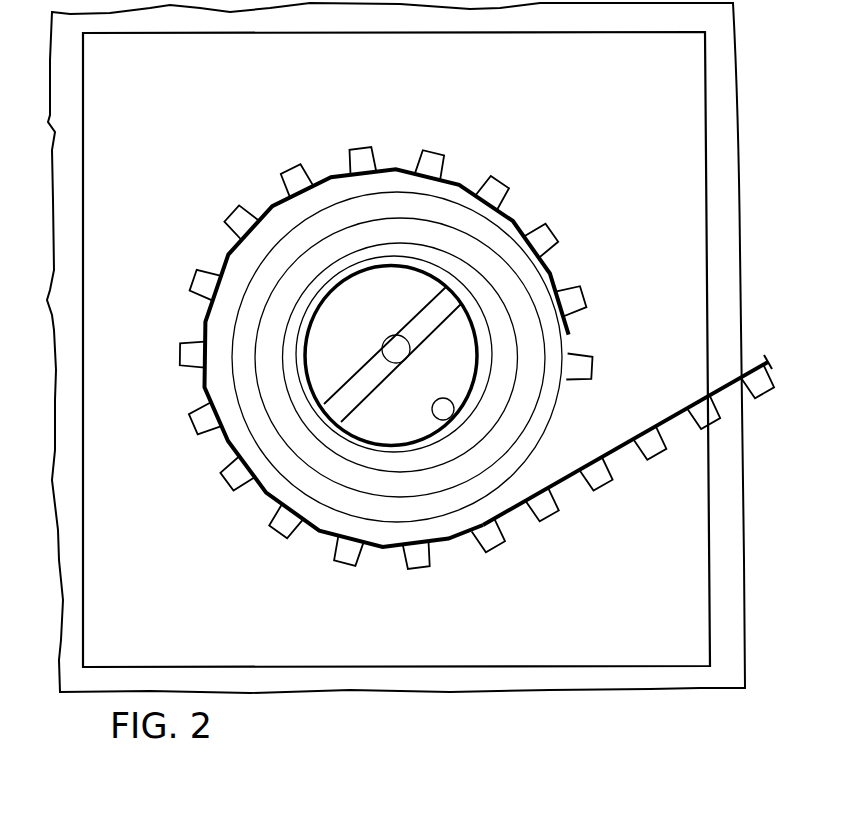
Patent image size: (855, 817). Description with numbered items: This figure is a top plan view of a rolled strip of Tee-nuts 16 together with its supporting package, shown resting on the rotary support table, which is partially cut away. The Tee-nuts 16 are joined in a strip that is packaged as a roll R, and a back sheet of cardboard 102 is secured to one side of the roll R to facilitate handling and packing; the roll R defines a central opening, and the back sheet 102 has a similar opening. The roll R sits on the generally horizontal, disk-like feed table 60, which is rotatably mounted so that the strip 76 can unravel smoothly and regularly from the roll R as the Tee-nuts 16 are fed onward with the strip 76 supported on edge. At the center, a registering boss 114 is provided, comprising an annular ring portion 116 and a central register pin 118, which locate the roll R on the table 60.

The roll R is at (210, 200).
The Tee-nuts 16 is at (430, 143).
The feed table 60 is at (472, 679).
The strip 76 is at (667, 420).
The back sheet of cardboard 102 is at (560, 636).
The registering boss 114 is at (403, 307).
The annular ring portion 116 is at (452, 404).
The central register pin 118 is at (406, 362).